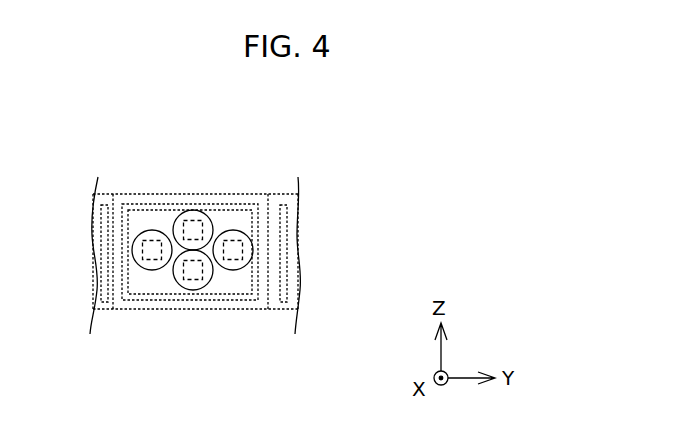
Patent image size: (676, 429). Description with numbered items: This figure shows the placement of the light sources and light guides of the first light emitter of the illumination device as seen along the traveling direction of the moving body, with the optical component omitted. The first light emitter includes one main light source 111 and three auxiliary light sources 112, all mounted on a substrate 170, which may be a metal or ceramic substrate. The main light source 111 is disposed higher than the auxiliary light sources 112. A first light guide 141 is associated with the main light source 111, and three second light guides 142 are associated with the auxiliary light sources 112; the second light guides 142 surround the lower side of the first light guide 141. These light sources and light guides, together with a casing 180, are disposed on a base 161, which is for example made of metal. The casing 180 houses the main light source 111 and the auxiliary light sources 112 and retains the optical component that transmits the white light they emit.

The main light source 111 is at (194, 212).
The auxiliary light source 112 is at (226, 272).
The first light guide 141 is at (174, 218).
The second light guide 142 is at (213, 238).
The base 161 is at (260, 201).
The substrate 170 is at (132, 195).
The casing 180 is at (265, 247).